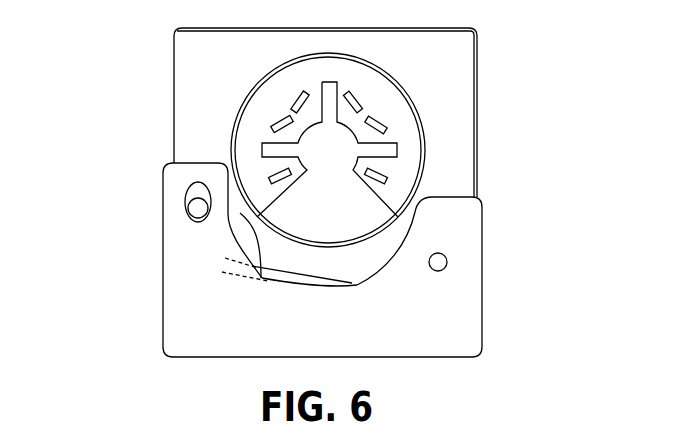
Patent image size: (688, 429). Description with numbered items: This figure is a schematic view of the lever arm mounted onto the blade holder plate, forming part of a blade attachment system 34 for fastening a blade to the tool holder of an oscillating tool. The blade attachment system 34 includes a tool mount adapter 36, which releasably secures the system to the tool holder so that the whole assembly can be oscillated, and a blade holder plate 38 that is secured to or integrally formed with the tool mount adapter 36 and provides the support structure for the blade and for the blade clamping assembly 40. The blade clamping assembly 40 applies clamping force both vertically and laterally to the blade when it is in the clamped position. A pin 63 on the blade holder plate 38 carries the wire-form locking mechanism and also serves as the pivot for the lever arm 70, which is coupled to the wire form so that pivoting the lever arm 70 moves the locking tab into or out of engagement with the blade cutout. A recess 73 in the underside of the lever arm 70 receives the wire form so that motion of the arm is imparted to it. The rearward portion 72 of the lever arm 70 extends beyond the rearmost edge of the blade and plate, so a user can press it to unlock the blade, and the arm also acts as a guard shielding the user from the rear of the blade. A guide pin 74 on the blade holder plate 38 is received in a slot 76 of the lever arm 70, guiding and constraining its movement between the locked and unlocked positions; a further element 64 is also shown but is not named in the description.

The blade attachment system 34 is at (538, 53).
The tool mount adapter 36 is at (405, 130).
The blade holder plate 38 is at (183, 80).
The blade clamping assembly 40 is at (110, 130).
The pin 63 is at (449, 262).
The resilient tab 64 is at (293, 259).
The lever arm 70 is at (148, 290).
The rearward portion 72 is at (192, 358).
The recess 73 is at (240, 288).
The guide pin 74 is at (183, 200).
The slot 76 is at (183, 212).